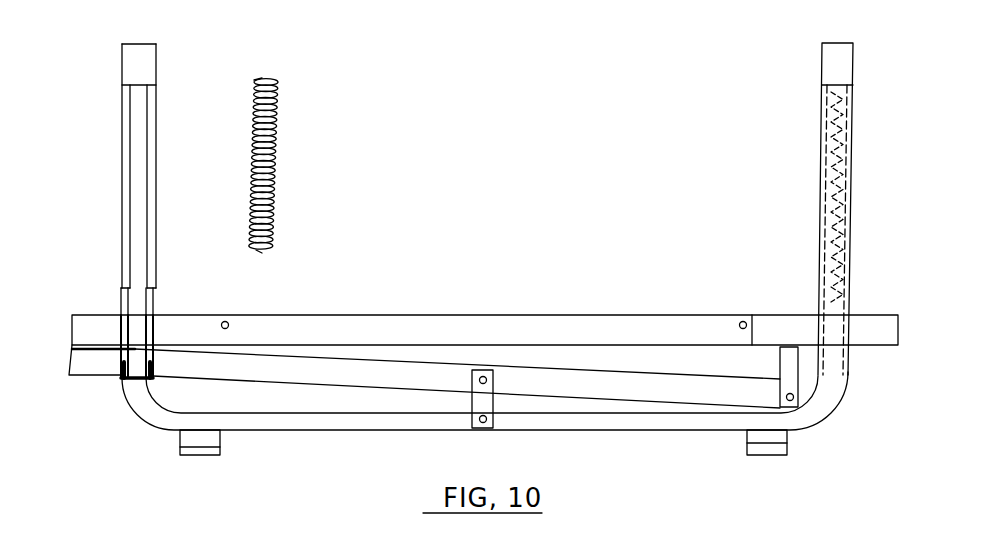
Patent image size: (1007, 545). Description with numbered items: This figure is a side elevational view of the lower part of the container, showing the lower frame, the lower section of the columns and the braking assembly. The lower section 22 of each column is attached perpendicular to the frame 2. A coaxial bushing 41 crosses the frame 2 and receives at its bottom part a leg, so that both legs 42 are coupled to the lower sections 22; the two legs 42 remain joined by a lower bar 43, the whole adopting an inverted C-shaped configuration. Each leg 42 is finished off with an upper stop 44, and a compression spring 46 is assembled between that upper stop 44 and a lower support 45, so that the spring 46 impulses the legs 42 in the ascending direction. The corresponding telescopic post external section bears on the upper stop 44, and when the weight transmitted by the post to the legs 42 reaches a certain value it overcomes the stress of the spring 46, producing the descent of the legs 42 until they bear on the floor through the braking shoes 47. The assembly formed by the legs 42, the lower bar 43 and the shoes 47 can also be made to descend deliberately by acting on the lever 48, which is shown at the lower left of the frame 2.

The frame 2 is at (532, 332).
The lower section of the columns 22 is at (120, 165).
The coaxial bushing 41 is at (122, 368).
The legs 42 is at (128, 213).
The lower bar 43 is at (358, 422).
The upper stop 44 is at (137, 83).
The lower support 45 is at (120, 287).
The compression spring 46 is at (276, 148).
The braking shoes 47 is at (187, 447).
The lever 48 is at (92, 363).